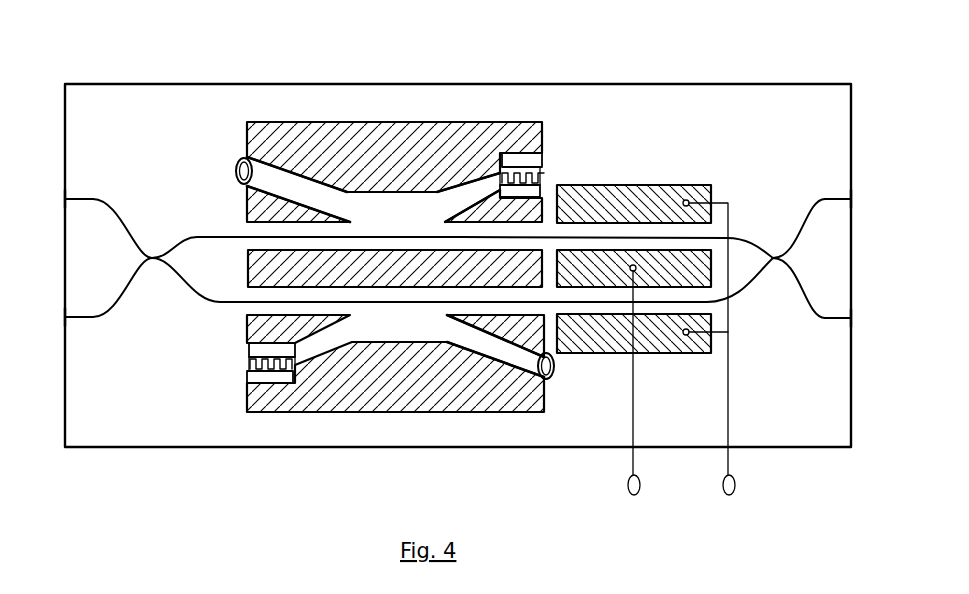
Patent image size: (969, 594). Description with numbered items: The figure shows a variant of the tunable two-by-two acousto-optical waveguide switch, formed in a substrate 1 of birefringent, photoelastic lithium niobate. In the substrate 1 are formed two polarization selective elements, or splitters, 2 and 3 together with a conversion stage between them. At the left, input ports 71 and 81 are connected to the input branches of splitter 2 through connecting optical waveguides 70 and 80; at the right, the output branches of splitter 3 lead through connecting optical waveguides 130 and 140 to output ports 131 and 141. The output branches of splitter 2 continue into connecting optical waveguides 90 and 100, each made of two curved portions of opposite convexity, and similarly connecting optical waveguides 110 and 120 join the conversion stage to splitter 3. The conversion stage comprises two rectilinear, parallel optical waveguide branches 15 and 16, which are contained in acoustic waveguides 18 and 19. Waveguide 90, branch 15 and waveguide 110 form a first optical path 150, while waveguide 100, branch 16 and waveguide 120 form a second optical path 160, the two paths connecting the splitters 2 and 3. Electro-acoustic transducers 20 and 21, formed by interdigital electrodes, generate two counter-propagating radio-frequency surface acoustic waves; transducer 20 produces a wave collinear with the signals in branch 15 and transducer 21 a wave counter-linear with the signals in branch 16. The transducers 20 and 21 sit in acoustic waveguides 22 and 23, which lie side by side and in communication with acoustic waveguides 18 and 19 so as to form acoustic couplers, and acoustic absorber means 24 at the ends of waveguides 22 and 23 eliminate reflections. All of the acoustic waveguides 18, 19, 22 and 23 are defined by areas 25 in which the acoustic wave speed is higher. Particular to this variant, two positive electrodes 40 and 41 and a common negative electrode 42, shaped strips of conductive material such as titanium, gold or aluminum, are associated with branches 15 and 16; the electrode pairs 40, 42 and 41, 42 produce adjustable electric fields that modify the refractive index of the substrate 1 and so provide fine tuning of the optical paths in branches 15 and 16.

The substrate 1 is at (597, 447).
The polarization selective element 2 is at (152, 259).
The polarization selective element 3 is at (773, 259).
The optical waveguide branch 15 is at (357, 236).
The optical waveguide branch 16 is at (383, 337).
The acoustic waveguide 18 is at (483, 188).
The acoustic waveguide 19 is at (478, 325).
The electro-acoustic transducer 20 is at (542, 172).
The electro-acoustic transducer 21 is at (247, 362).
The acoustic waveguide 22 is at (503, 170).
The acoustic waveguide 23 is at (318, 347).
The acoustic absorber means 24 is at (238, 168).
The areas of higher acoustic speed 25 is at (315, 135).
The positive electrode 40 is at (600, 192).
The positive electrode 41 is at (665, 352).
The common negative electrode 42 is at (637, 262).
The connecting optical waveguide 70 is at (93, 199).
The input port 71 is at (65, 198).
The connecting optical waveguide 80 is at (95, 317).
The input port 81 is at (65, 318).
The connecting optical waveguide 90 is at (197, 237).
The connecting optical waveguide 100 is at (205, 303).
The connecting optical waveguide 110 is at (738, 238).
The connecting optical waveguide 120 is at (738, 303).
The connecting optical waveguide 130 is at (822, 199).
The output port 131 is at (851, 199).
The connecting optical waveguide 140 is at (823, 318).
The output port 141 is at (851, 318).
The optical path 150 is at (375, 235).
The optical path 160 is at (440, 302).